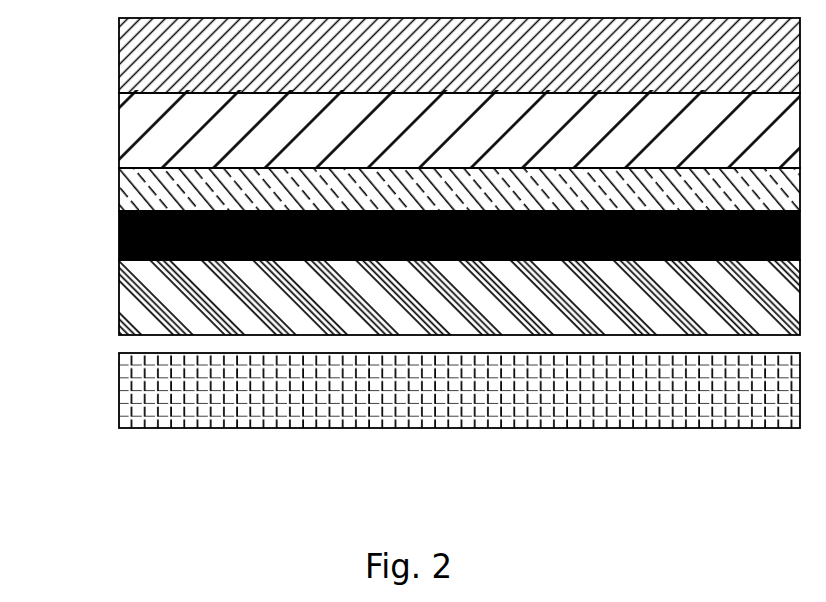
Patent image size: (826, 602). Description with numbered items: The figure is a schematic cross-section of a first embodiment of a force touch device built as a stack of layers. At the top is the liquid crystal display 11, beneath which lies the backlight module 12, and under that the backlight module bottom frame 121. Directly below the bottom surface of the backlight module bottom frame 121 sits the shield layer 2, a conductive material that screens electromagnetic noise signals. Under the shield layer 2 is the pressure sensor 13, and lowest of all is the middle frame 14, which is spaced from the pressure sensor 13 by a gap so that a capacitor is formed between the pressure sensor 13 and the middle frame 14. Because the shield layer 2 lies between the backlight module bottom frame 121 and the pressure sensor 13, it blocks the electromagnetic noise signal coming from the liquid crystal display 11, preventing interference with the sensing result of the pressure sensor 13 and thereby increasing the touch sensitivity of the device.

The liquid crystal display 11 is at (153, 58).
The backlight module 12 is at (157, 140).
The backlight module bottom frame 121 is at (157, 197).
The shield layer 2 is at (119, 240).
The pressure sensor 13 is at (148, 312).
The middle frame 14 is at (153, 408).